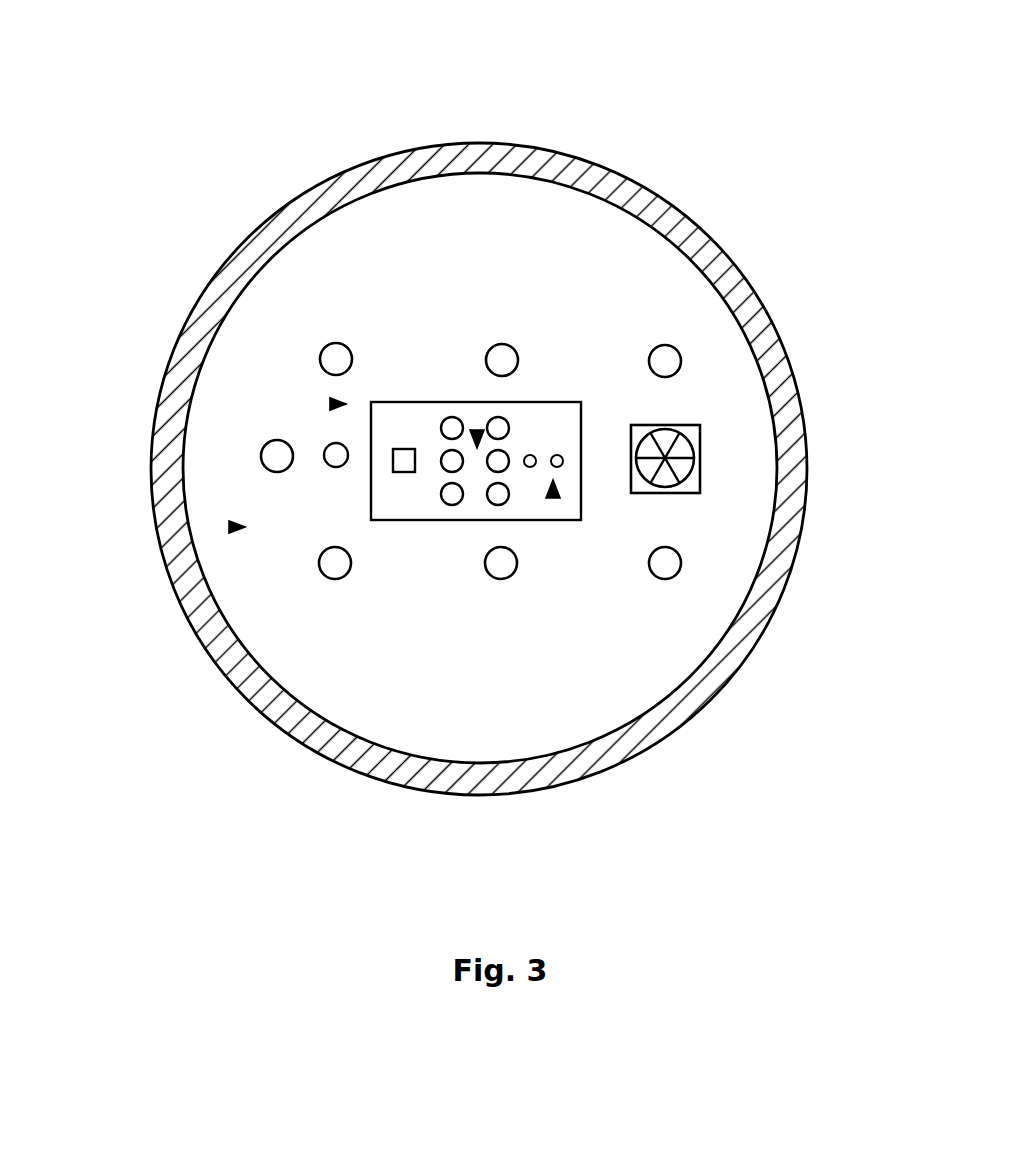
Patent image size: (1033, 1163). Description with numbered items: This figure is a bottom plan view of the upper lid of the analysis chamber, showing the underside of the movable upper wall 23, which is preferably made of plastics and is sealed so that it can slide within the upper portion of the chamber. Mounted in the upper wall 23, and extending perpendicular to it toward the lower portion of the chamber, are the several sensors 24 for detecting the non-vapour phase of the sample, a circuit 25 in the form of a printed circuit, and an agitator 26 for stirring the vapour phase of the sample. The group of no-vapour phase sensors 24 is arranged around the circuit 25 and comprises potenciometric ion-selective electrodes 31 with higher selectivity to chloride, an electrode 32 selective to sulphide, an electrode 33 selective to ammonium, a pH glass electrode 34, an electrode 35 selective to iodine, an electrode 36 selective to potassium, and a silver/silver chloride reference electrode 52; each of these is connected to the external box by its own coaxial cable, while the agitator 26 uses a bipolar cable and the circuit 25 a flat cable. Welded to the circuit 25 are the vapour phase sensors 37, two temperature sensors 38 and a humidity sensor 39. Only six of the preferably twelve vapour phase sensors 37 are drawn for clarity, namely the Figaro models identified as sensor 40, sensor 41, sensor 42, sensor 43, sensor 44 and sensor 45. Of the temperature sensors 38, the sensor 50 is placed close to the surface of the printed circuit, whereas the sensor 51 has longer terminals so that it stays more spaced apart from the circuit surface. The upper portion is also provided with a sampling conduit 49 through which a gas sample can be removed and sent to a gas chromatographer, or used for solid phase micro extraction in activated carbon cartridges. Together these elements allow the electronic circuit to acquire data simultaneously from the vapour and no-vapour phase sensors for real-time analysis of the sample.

The upper wall 23 is at (271, 321).
The second sensor 24 is at (232, 527).
The circuit 25 is at (326, 444).
The agitator 26 is at (700, 466).
The potenciometric ion-selective-electrodes 31 is at (320, 575).
The ISE-PPM with higher selectivity to sulphide 32 is at (498, 578).
The ISE-PPM with higher selectivity to NH4+ 33 is at (666, 580).
The pH glass electrode 34 is at (667, 345).
The ISE-PPM with higher selectivity to iodine 35 is at (508, 350).
The ISE-PPM with higher selectivity to potassium 36 is at (320, 366).
The first sensor 37 is at (477, 436).
The third sensor 38 is at (553, 492).
The fourth sensor 39 is at (393, 462).
The TGS 825 vapour phase sensor 40 is at (440, 418).
The TGS 832 vapour phase sensor 41 is at (505, 423).
The TGS 882 vapour phase sensor 42 is at (445, 457).
The TGS 2610 vapour phase sensor 43 is at (530, 470).
The TGS 2611 vapour phase sensor 44 is at (443, 493).
The TGS 2620 vapour phase sensor 45 is at (487, 500).
The sampling conduit 49 is at (332, 404).
The temperature sensor 50 is at (560, 452).
The temperature sensor 51 is at (503, 465).
The reference electrode 52 is at (266, 448).